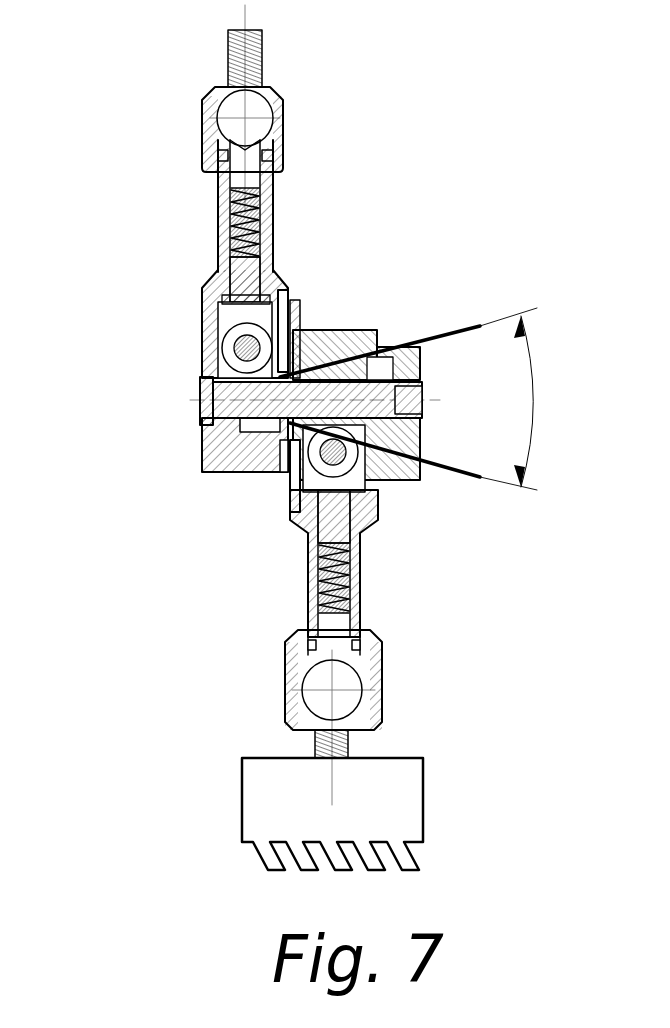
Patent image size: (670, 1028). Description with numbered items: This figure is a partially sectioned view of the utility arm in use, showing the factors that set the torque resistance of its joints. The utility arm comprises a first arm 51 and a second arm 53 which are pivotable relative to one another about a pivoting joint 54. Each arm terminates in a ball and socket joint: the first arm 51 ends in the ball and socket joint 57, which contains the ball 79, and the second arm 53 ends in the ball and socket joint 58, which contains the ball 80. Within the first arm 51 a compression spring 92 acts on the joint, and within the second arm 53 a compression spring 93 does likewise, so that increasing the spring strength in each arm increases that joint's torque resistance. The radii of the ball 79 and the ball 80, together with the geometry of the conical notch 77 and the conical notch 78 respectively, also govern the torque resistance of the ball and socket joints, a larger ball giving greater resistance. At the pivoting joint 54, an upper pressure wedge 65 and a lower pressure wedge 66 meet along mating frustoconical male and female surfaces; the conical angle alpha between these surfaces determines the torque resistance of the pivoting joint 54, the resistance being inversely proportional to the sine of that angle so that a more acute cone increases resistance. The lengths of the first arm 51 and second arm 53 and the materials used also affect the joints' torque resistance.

The conical notch 77 is at (250, 143).
The ball and socket joint 57 is at (283, 110).
The ball 79 is at (250, 118).
The compression spring 92 is at (218, 202).
The first arm 51 is at (265, 222).
The upper pressure wedge 65 is at (330, 362).
The lower pressure wedge 66 is at (280, 377).
The pivoting joint 54 is at (202, 505).
The second arm 53 is at (308, 570).
The compression spring 93 is at (355, 580).
The ball 80 is at (317, 682).
The ball and socket joint 58 is at (378, 683).
The conical notch 78 is at (338, 660).